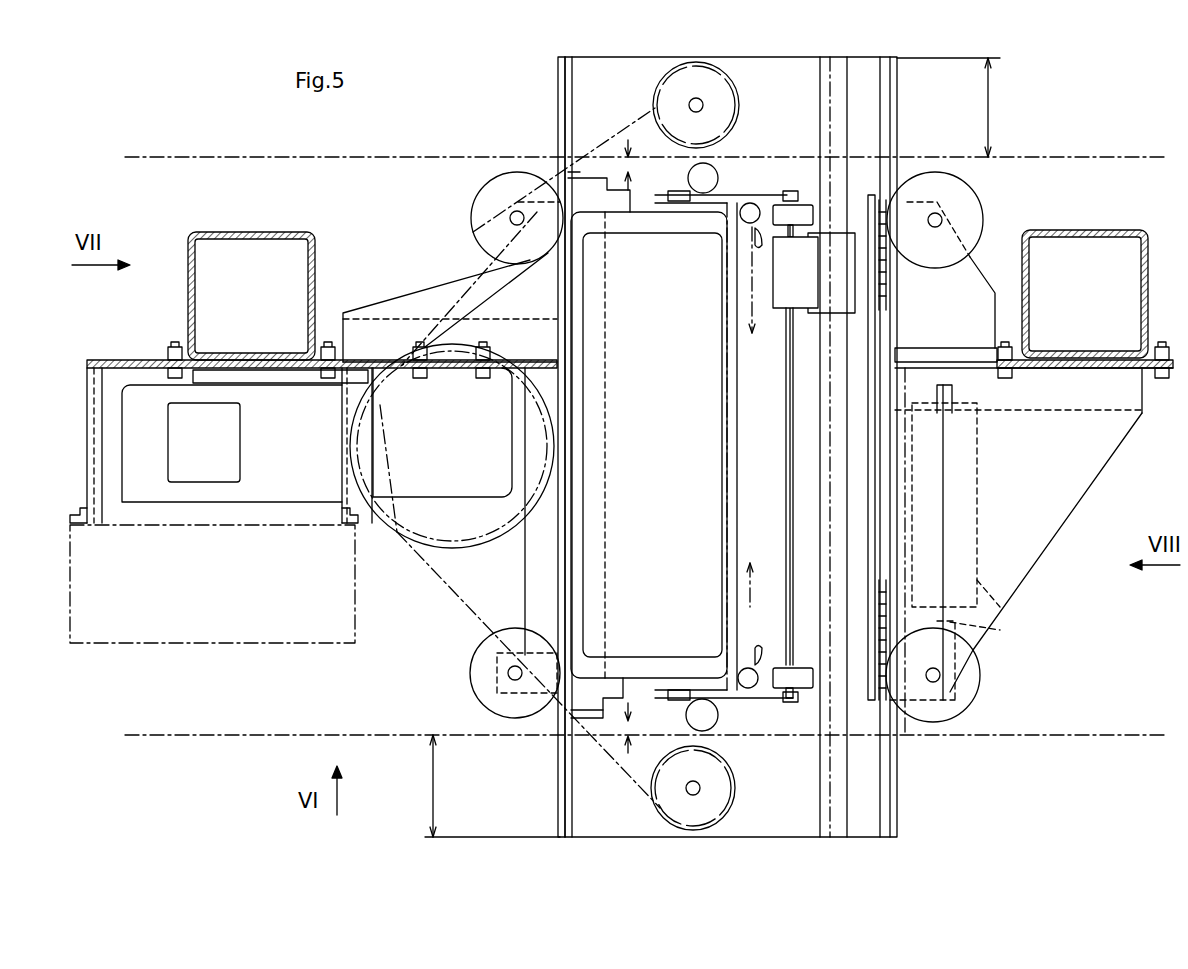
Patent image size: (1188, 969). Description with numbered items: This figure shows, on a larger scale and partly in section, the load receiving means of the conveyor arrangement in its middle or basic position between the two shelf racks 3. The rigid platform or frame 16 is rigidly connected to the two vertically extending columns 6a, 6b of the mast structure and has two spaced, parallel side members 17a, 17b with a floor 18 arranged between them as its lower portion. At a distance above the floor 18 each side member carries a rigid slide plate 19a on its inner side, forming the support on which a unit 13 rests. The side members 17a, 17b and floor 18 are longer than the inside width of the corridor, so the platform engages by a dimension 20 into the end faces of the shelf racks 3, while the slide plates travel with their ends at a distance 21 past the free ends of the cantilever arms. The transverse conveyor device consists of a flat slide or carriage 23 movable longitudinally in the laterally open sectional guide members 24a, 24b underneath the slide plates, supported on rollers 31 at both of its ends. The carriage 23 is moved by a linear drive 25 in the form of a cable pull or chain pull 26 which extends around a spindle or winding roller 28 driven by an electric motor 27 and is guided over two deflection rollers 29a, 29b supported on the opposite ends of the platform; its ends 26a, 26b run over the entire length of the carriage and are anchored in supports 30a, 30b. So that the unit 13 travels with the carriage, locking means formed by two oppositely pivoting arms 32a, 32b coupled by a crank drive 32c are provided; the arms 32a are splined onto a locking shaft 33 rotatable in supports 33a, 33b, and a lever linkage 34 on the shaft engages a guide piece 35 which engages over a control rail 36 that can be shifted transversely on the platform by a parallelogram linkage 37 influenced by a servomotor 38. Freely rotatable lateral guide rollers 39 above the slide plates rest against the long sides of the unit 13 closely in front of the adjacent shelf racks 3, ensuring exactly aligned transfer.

The shelf racks 3 is at (1068, 157).
The column 6a is at (268, 232).
The column 6b is at (1108, 230).
The unit 13 is at (625, 236).
The platform or frame 16 is at (1085, 445).
The side member 17a is at (560, 560).
The side member 17b is at (930, 505).
The floor 18 is at (605, 85).
The slide plate 19a is at (588, 200).
The dimension 20 is at (712, 447).
The distance 21 is at (626, 160).
The slide or carriage 23 is at (820, 392).
The guide member 24a is at (570, 105).
The guide member 24b is at (886, 95).
The linear drive 25 is at (440, 355).
The cable pull or chain pull 26 is at (470, 285).
The end of cable pull 26a is at (748, 592).
The end of cable pull 26b is at (750, 300).
The electric motor 27 is at (298, 485).
The spindle or winding roller 28 is at (372, 520).
The deflection roller 29a is at (715, 78).
The deflection roller 29b is at (713, 808).
The support 30a is at (742, 668).
The support 30b is at (740, 215).
The rollers 31 is at (887, 300).
The pivotable arm 32a is at (797, 205).
The pivotable arm 32b is at (678, 193).
The crank drive 32c is at (788, 193).
The locking shaft 33 is at (788, 440).
The support 33a is at (808, 205).
The support 33b is at (808, 700).
The lever linkage 34 is at (830, 280).
The guide piece 35 is at (785, 268).
The control rail 36 is at (790, 350).
The parallelogram linkage 37 is at (873, 200).
The servomotor 38 is at (985, 605).
The lateral guide rollers 39 is at (490, 208).